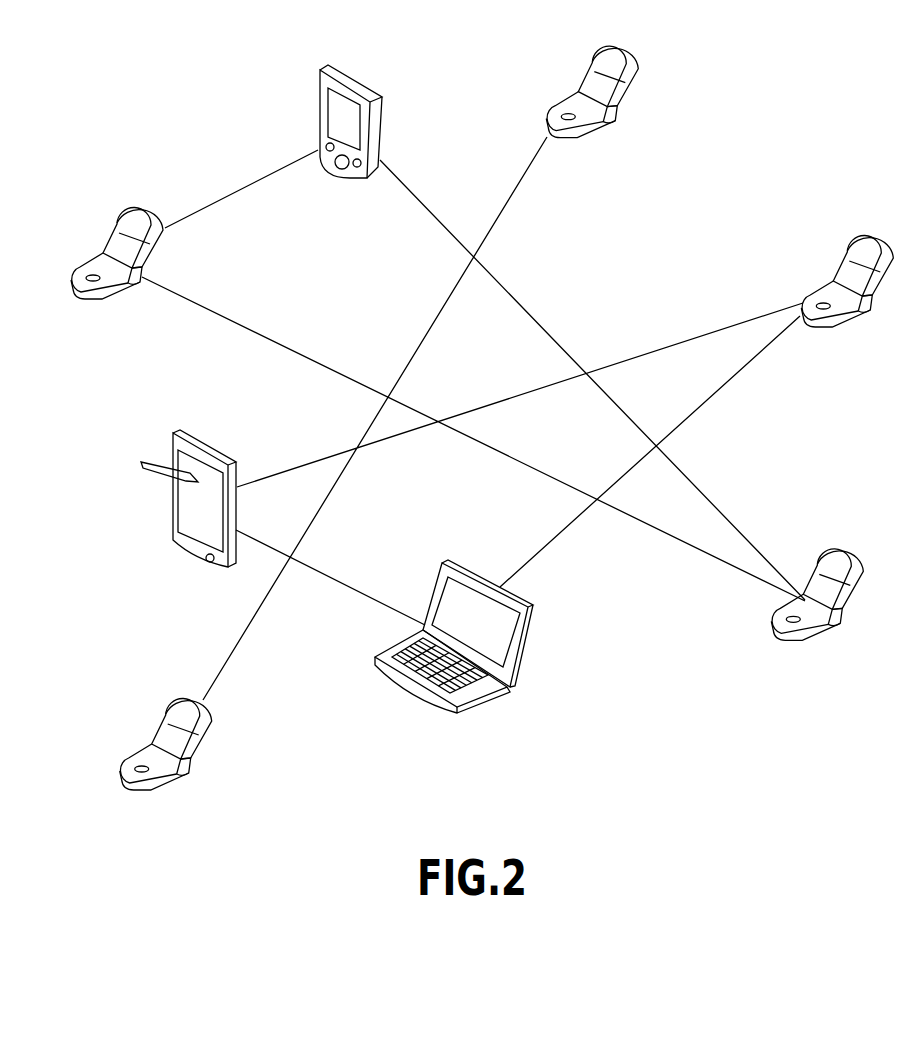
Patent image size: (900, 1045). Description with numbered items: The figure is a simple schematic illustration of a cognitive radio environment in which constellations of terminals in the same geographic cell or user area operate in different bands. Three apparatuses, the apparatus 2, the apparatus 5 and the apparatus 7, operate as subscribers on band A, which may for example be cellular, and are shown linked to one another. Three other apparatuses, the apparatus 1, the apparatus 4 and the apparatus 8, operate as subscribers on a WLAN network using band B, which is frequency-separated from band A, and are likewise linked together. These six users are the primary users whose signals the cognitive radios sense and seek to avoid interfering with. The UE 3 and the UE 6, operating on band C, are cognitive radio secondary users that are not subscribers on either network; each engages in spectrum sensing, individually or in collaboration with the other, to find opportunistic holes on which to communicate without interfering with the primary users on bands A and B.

The apparatus operating as subscriber on band B 1 is at (108, 288).
The apparatus operating as subscriber on band A 2 is at (184, 531).
The UE operating as cognitive radio secondary user 3 is at (153, 783).
The apparatus operating as subscriber on band B 4 is at (335, 154).
The apparatus operating as subscriber on band A 5 is at (454, 671).
The UE operating as cognitive radio secondary user 6 is at (604, 127).
The apparatus operating as subscriber on band A 7 is at (849, 316).
The apparatus operating as subscriber on band B 8 is at (811, 633).